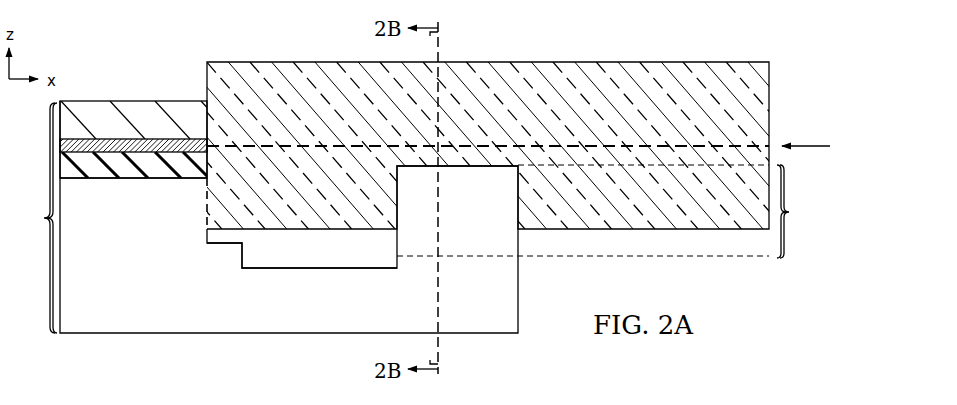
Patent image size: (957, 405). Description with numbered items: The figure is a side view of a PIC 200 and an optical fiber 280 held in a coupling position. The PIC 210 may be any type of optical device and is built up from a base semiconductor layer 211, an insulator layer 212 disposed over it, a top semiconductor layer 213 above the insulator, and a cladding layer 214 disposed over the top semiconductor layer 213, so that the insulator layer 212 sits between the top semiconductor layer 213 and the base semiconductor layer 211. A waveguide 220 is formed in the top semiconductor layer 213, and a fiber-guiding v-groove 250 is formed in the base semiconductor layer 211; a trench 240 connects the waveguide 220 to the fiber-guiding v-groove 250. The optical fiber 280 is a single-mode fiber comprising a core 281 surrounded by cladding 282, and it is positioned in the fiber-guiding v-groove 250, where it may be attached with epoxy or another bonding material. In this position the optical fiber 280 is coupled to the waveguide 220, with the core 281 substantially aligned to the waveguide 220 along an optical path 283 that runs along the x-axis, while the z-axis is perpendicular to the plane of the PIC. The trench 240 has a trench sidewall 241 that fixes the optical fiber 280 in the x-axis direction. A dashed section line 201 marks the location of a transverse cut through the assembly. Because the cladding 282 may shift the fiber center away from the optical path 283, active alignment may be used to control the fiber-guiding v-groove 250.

The PIC 200 is at (868, 68).
The section line axis 201 is at (437, 291).
The PIC 210 is at (30, 218).
The base semiconductor layer 211 is at (273, 312).
The insulator layer 212 is at (100, 172).
The top semiconductor layer 213 is at (111, 146).
The cladding layer 214 is at (96, 107).
The waveguide 220 is at (161, 134).
The trench 240 is at (316, 244).
The trench sidewall 241 is at (203, 193).
The fiber-guiding v-groove 250 is at (800, 211).
The optical fiber 280 is at (507, 58).
The core 281 is at (663, 146).
The cladding 282 is at (650, 68).
The optical path 283 is at (807, 146).